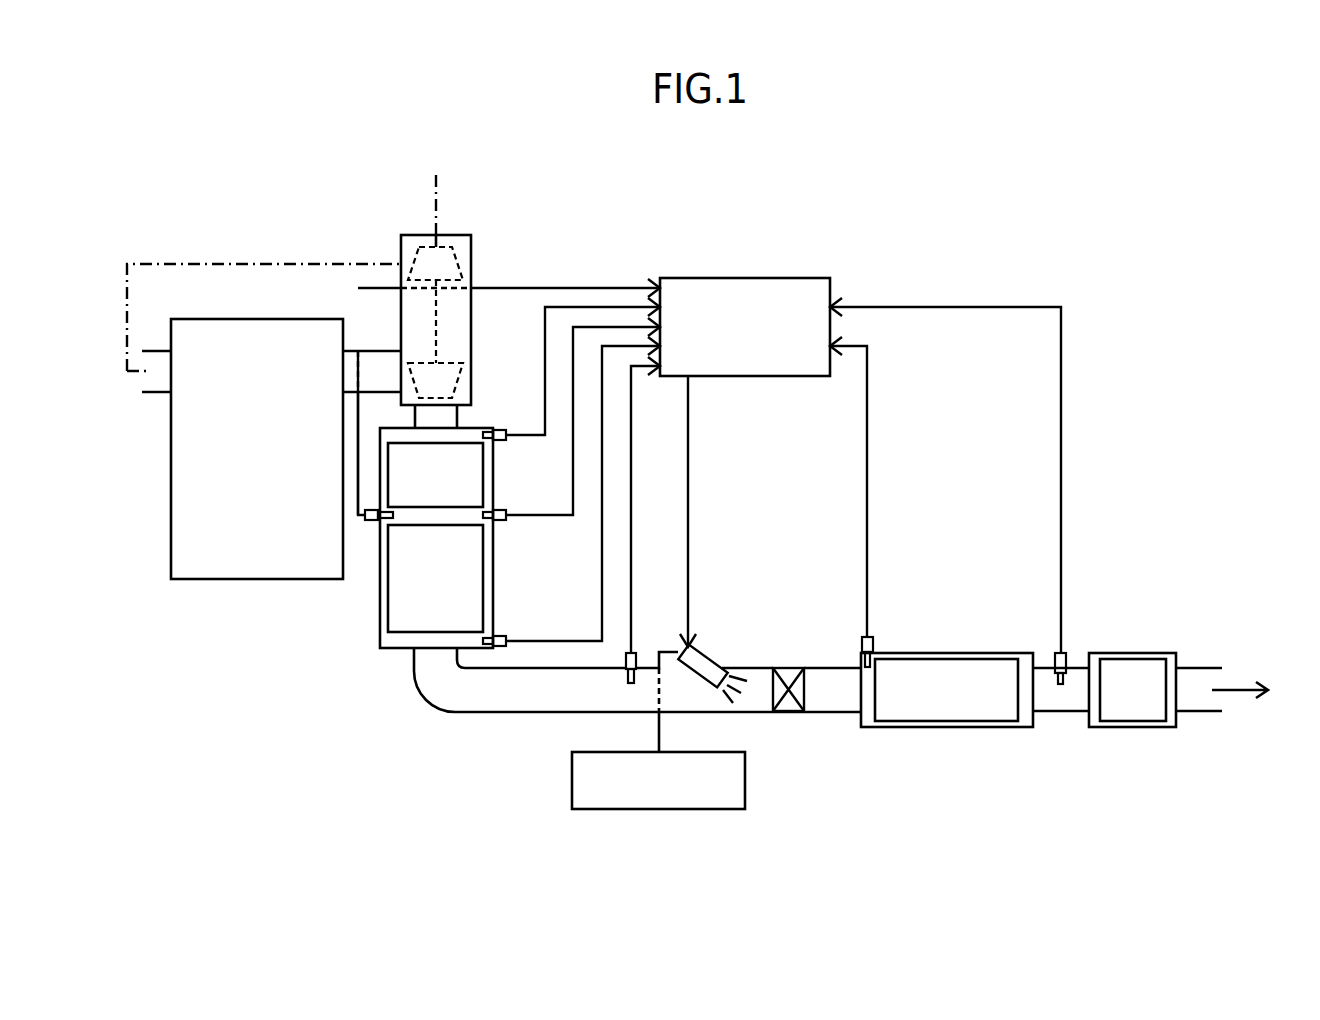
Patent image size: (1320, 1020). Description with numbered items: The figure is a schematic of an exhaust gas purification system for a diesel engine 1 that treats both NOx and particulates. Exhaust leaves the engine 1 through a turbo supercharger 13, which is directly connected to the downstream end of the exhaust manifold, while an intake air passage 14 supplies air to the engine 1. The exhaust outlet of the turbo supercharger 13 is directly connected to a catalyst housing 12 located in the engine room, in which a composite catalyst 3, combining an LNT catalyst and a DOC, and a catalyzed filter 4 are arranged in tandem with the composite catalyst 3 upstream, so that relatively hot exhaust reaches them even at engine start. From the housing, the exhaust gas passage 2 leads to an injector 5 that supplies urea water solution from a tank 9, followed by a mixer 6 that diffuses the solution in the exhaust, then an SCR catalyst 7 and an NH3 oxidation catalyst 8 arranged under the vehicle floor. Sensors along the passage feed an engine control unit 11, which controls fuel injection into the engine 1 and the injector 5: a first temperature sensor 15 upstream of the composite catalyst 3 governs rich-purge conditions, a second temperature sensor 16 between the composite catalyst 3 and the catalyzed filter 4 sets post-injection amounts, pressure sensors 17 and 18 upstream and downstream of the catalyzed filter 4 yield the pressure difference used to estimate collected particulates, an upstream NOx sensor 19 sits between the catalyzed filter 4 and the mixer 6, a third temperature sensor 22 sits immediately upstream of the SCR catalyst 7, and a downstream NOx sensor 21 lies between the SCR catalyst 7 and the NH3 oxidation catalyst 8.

The engine 1 is at (225, 581).
The exhaust gas passage 2 is at (443, 712).
The composite catalyst 3 is at (483, 470).
The catalyzed filter 4 is at (470, 577).
The injector 5 is at (707, 652).
The mixer 6 is at (792, 667).
The SCR catalyst 7 is at (955, 668).
The NH3 oxidation catalyst 8 is at (1137, 668).
The tank 9 is at (745, 781).
The engine control unit (ECU) 11 is at (830, 291).
The catalyst housing 12 is at (380, 621).
The turbo supercharger 13 is at (471, 256).
The intake air passage 14 is at (222, 263).
The first temperature sensor 15 is at (506, 432).
The second temperature sensor 16 is at (506, 520).
The upstream pressure sensor 17 is at (372, 523).
The downstream pressure sensor 18 is at (506, 638).
The upstream NOx sensor 19 is at (637, 660).
The downstream NOx sensor 21 is at (1068, 660).
The third temperature sensor 22 is at (876, 645).